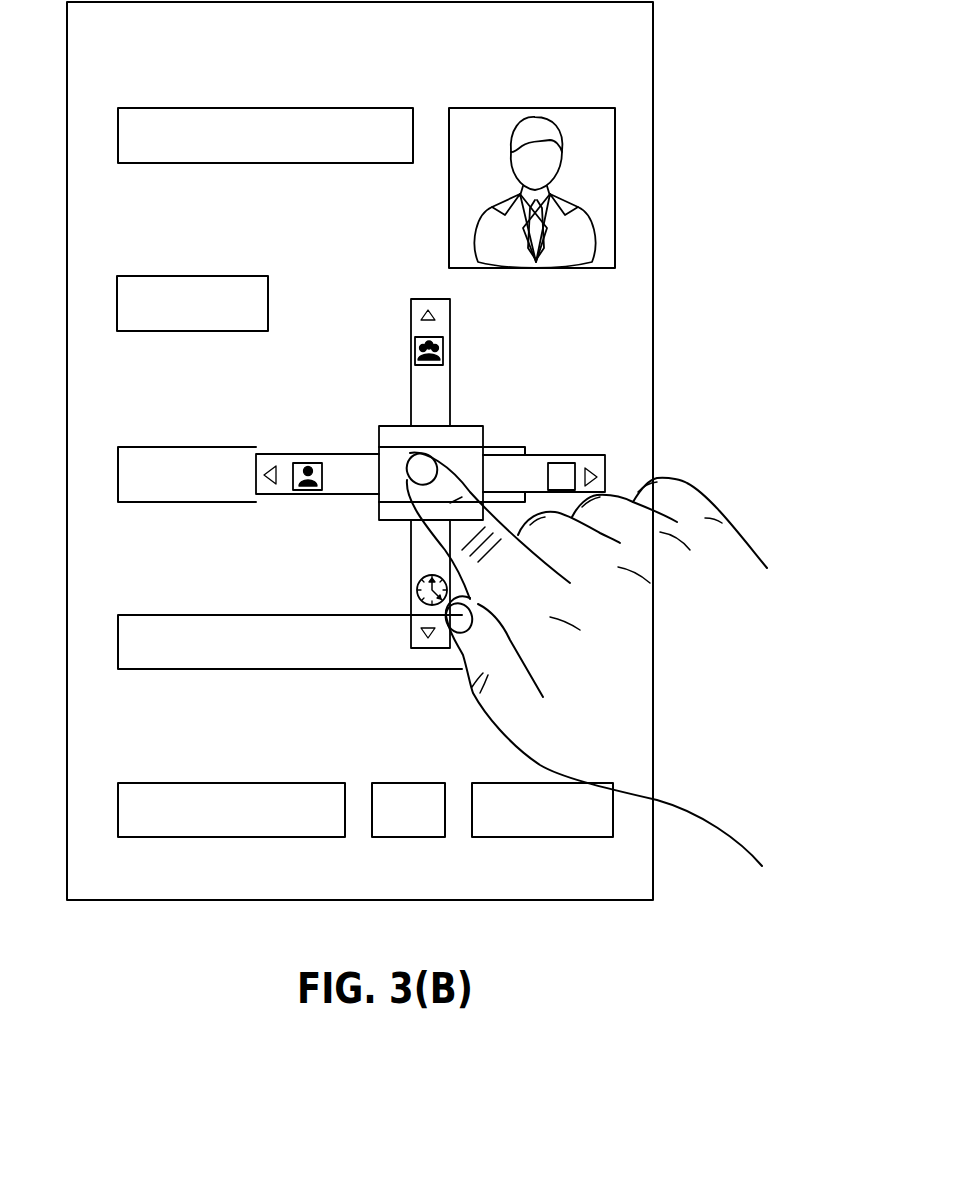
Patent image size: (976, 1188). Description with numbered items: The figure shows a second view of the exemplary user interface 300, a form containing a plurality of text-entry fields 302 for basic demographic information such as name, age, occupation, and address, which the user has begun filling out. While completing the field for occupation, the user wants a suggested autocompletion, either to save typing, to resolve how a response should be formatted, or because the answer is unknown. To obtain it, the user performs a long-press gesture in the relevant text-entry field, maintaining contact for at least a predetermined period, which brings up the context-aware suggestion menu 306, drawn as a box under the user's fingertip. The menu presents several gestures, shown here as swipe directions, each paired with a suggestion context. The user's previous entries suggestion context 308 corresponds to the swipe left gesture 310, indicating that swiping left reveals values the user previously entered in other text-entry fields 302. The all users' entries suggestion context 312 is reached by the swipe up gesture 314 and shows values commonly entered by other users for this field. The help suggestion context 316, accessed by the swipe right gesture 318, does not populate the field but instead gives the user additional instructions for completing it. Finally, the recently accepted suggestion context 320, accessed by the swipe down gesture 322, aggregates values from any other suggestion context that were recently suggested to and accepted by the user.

The user interface 300 is at (66, 456).
The text-entry fields 302 is at (207, 445).
The context-aware suggestion menu 306 is at (482, 438).
The user's previous entries suggestion context 308 is at (307, 462).
The swipe left gesture 310 is at (268, 461).
The all users' entries suggestion context 312 is at (446, 350).
The swipe up gesture 314 is at (413, 313).
The help suggestion context 316 is at (557, 461).
The swipe right gesture 318 is at (596, 457).
The recently accepted suggestion context 320 is at (415, 590).
The swipe down gesture 322 is at (438, 645).